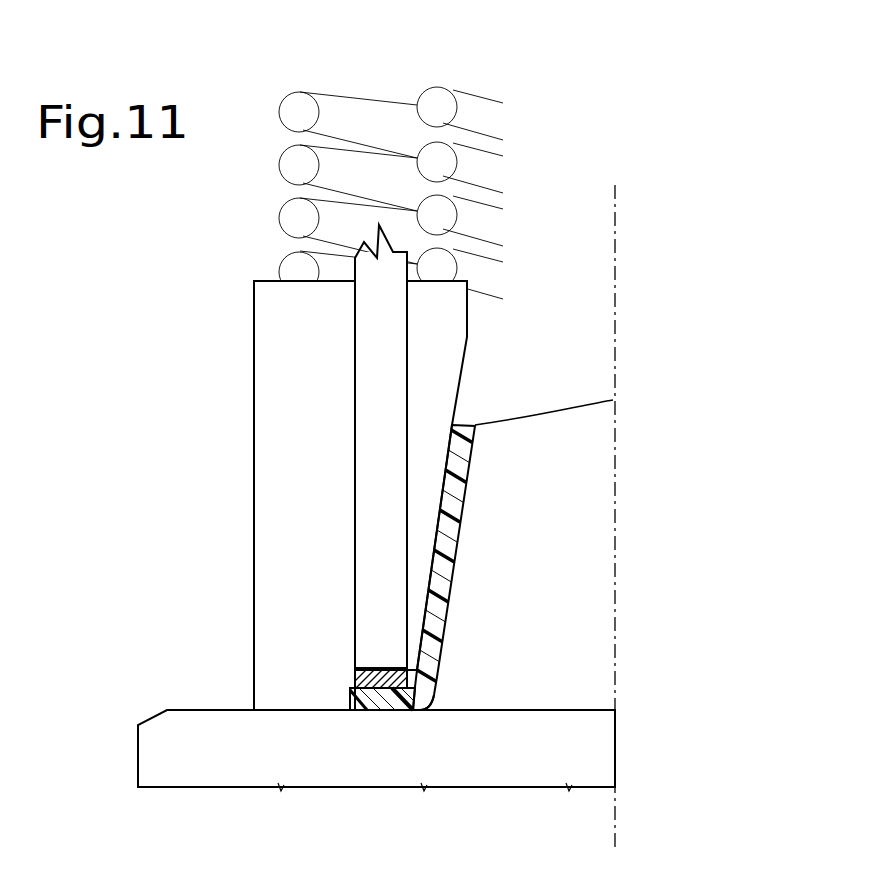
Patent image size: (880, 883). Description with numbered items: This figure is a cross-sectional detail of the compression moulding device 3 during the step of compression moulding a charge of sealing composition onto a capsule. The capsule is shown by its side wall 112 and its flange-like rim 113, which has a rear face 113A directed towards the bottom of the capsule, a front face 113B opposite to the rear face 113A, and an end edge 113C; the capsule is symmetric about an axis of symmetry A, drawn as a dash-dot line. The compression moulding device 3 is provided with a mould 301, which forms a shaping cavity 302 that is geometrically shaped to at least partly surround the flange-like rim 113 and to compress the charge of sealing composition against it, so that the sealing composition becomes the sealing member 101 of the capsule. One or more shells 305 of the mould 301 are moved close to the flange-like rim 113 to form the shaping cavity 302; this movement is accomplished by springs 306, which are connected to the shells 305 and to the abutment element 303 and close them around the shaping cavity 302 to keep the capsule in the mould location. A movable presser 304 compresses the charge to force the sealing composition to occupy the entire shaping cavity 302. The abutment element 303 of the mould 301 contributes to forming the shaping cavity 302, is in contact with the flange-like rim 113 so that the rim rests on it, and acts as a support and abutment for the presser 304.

The compression moulding device 3 is at (282, 467).
The springs 306 is at (427, 100).
The shells 305 is at (302, 400).
The presser 304 is at (373, 450).
The mould 301 is at (348, 677).
The sealing member 101 is at (380, 668).
The side wall 112 is at (447, 570).
The shaping cavity 302 is at (403, 677).
The flange-like rim 113 is at (373, 711).
The rear face 113A is at (416, 708).
The front face 113B is at (370, 706).
The end edge 113C is at (352, 704).
The abutment element 303 is at (537, 737).
The axis of symmetry A is at (616, 242).